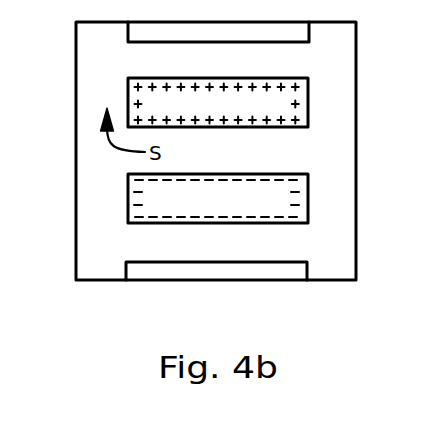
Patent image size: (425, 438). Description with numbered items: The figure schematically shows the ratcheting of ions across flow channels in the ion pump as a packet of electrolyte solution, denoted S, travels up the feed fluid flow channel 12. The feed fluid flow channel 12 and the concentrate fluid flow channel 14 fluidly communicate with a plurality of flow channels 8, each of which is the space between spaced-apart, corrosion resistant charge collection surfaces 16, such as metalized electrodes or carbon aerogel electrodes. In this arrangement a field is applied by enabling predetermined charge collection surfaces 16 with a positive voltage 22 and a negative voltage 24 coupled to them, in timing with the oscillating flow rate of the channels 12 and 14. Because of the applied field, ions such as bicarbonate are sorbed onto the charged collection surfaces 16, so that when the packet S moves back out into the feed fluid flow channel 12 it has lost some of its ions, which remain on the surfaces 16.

The fluid flow channel 8 is at (0, 113).
The feed fluid flow channel 12 is at (93, 183).
The concentrate fluid flow channel 14 is at (330, 52).
The charge collection surface 16 is at (223, 112).
The positive voltage 22 is at (300, 105).
The negative voltage 24 is at (295, 191).